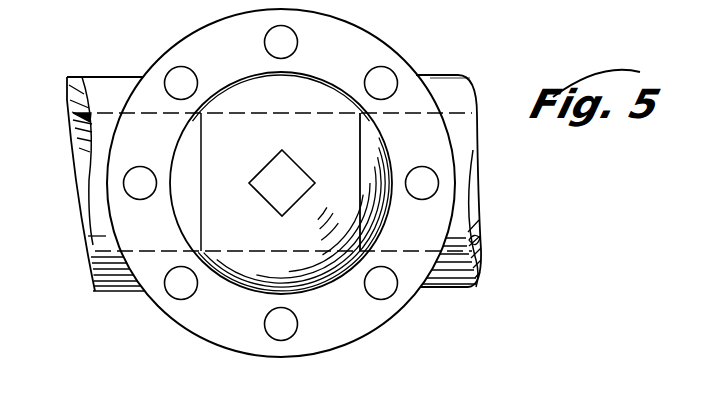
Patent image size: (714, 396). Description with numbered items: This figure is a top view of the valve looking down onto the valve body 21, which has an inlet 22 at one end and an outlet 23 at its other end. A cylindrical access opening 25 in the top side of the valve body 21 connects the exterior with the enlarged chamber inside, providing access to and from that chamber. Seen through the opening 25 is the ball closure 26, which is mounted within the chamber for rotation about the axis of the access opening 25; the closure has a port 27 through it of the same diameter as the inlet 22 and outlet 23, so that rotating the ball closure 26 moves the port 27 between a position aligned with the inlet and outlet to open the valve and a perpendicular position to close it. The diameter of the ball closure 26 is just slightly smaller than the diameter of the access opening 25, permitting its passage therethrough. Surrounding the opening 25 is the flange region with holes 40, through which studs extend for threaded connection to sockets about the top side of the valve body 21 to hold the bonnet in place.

The valve body 21 is at (432, 288).
The inlet 22 is at (90, 143).
The outlet 23 is at (470, 229).
The cylindrical opening 25 is at (383, 144).
The ball closure 26 is at (246, 231).
The port 27 is at (236, 115).
The holes 40 is at (270, 333).